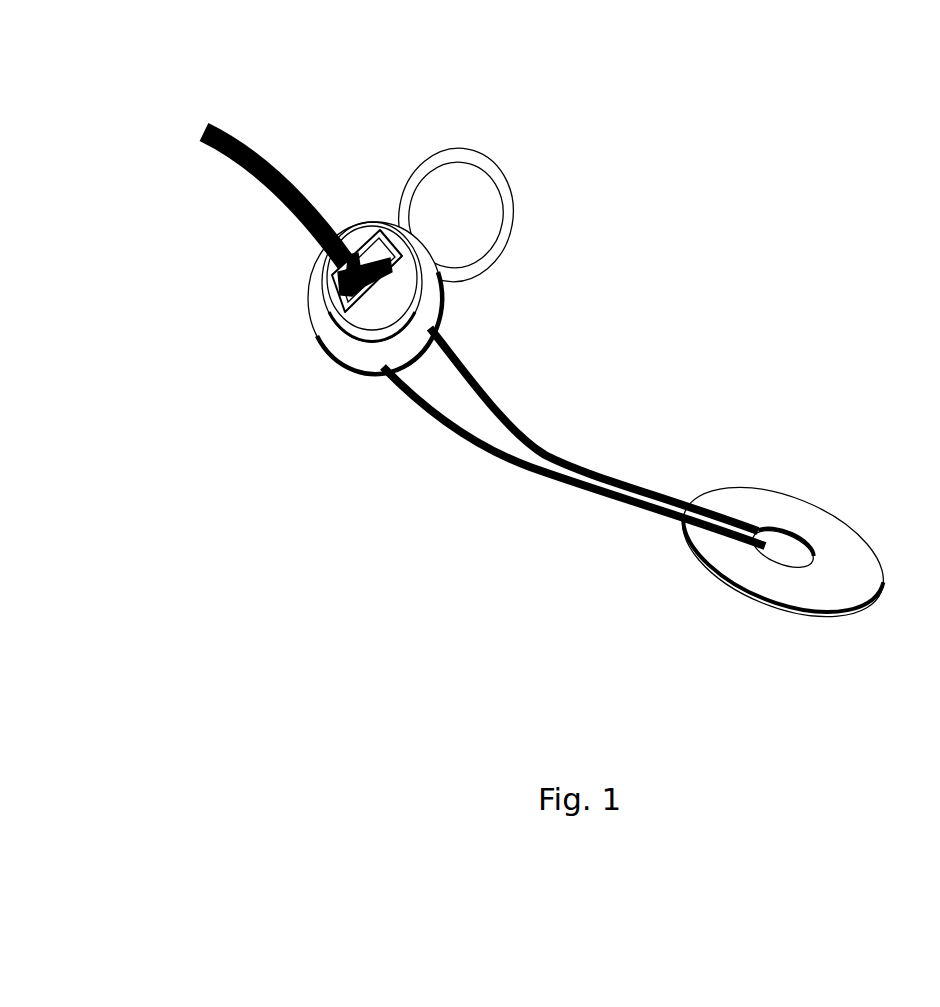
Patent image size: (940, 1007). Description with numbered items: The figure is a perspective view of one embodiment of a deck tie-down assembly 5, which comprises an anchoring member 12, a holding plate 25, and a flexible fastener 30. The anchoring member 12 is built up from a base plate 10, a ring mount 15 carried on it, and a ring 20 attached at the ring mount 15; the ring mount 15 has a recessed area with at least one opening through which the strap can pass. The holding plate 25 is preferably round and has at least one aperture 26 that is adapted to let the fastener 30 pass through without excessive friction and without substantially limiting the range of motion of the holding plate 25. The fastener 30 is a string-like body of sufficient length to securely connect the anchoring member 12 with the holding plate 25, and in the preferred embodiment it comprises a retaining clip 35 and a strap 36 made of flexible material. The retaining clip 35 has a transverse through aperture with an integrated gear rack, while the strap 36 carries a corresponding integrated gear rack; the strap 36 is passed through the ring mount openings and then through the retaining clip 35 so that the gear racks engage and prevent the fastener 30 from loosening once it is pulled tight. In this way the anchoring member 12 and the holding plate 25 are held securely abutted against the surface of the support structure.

The deck tie-down assembly 5 is at (648, 300).
The base plate 10 is at (347, 353).
The anchoring member 12 is at (315, 338).
The ring mount 15 is at (356, 223).
The ring 20 is at (500, 250).
The holding plate 25 is at (747, 560).
The aperture 26 is at (783, 553).
The flexible fastener 30 is at (215, 143).
The retaining clip 35 is at (345, 271).
The strap 36 is at (528, 473).